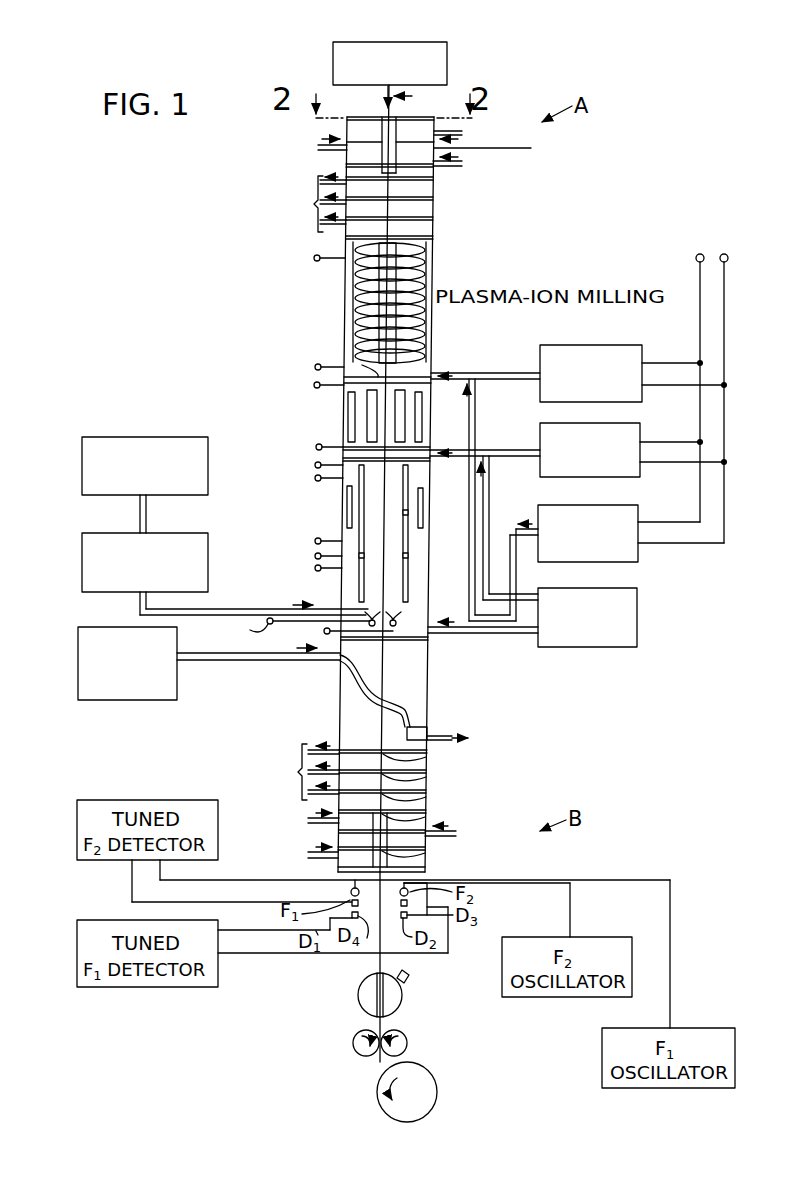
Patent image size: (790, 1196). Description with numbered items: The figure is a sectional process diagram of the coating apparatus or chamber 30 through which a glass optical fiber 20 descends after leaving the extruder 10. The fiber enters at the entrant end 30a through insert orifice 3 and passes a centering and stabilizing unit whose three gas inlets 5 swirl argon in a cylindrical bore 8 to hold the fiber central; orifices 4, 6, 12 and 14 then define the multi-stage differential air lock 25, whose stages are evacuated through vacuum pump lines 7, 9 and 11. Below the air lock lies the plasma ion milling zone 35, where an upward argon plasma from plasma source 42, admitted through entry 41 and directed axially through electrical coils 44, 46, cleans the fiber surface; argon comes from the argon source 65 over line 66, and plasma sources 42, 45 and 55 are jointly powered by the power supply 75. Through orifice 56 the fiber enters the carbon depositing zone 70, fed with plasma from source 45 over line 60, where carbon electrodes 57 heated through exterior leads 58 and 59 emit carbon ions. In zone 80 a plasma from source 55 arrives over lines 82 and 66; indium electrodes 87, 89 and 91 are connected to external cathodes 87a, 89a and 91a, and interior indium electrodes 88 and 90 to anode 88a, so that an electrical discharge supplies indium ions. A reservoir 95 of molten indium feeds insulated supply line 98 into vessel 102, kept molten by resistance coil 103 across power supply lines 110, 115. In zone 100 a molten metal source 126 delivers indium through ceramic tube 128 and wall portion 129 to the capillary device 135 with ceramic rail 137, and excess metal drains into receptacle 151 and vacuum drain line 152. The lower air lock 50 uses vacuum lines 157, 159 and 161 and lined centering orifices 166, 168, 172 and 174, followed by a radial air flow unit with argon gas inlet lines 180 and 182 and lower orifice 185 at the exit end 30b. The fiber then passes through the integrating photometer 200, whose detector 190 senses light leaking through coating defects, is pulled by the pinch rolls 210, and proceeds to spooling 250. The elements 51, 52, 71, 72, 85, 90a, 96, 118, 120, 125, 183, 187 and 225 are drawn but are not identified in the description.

The insert orifice 3 is at (414, 96).
The orifice 4 is at (382, 168).
The gas inlets 5 is at (330, 141).
The orifice 6 is at (372, 182).
The vacuum pump line 7 is at (360, 198).
The internal cylindrical bore 8 is at (462, 148).
The vacuum pump line 9 is at (320, 226).
The extruder 10 is at (447, 40).
The vacuum pump line 11 is at (332, 233).
The orifice 12 is at (410, 200).
The orifice 14 is at (415, 238).
The optical fiber 20 is at (395, 117).
The multi-stage differential air lock 25 is at (415, 218).
The coating apparatus or chamber 30 is at (440, 248).
The entrant end 30a is at (353, 115).
The exit end 30b is at (435, 866).
The plasma ion milling zone 35 is at (428, 265).
The entry 41 is at (450, 370).
The plasma source 42 is at (636, 345).
The electrical coil 44 is at (362, 290).
The plasma source 45 is at (634, 423).
The electrical coil 46 is at (366, 310).
The lower air lock 50 is at (430, 802).
The electrical terminal 51 is at (314, 259).
The electrical terminal 52 is at (320, 356).
The plasma source 55 is at (632, 505).
The orifice 56 is at (405, 372).
The carbon electrodes 57 is at (314, 385).
The exterior lead 58 is at (315, 367).
The exterior lead 59 is at (316, 447).
The line 60 is at (471, 430).
The argon source 65 is at (630, 590).
The argon line 66 is at (478, 378).
The carbon depositing zone 70 is at (462, 384).
The plasma inlet 71 is at (484, 448).
The inlet 72 is at (341, 610).
The power supply 75 is at (695, 192).
The vacuum chamber or zone 80 is at (490, 472).
The line 82 is at (438, 634).
The conduit 85 is at (477, 503).
The indium electrode 87 is at (362, 485).
The external cathode 87a is at (315, 465).
The interior indium electrode 88 is at (360, 515).
The anode 88a is at (315, 479).
The indium electrode 89 is at (360, 528).
The external cathode 89a is at (315, 541).
The interior indium electrode 90 is at (408, 540).
The electrode terminal 90a is at (315, 556).
The indium electrode 91 is at (408, 585).
The external cathode 91a is at (315, 569).
The reservoir 95 is at (82, 462).
The float chamber 96 is at (82, 562).
The insulated supply line 98 is at (168, 512).
The zone 100 is at (432, 690).
The molten metal receiving vessel 102 is at (398, 618).
The resistance coil 103 is at (410, 641).
The power supply line 110 is at (262, 630).
The power supply line 115 is at (325, 634).
The electrode plate 118 is at (412, 490).
The chamber 120 is at (428, 656).
The electrode plate 125 is at (421, 574).
The molten metal source 126 is at (78, 652).
The ceramic tube 128 is at (232, 662).
The wall portion 129 is at (340, 680).
The capillary device 135 is at (373, 695).
The ceramic rail 137 is at (355, 700).
The receptacle 151 is at (420, 727).
The vacuum drain line 152 is at (440, 728).
The vacuum line 157 is at (310, 756).
The vacuum line 159 is at (308, 770).
The vacuum line 161 is at (310, 795).
The lined centering orifice 166 is at (427, 754).
The lined centering orifice 168 is at (427, 775).
The lined centering orifice 172 is at (427, 792).
The lined centering orifice 174 is at (426, 818).
The argon gas inlet line 180 is at (445, 832).
The argon gas inlet line 182 is at (300, 862).
The lead 183 is at (352, 876).
The lower orifice 185 is at (390, 852).
The argon inlet 187 is at (312, 832).
The detector 190 is at (406, 978).
The integrating photometer 200 is at (403, 996).
The pinch rolls 210 is at (408, 1043).
The fiber 225 is at (378, 1075).
The spooling 250 is at (437, 1100).